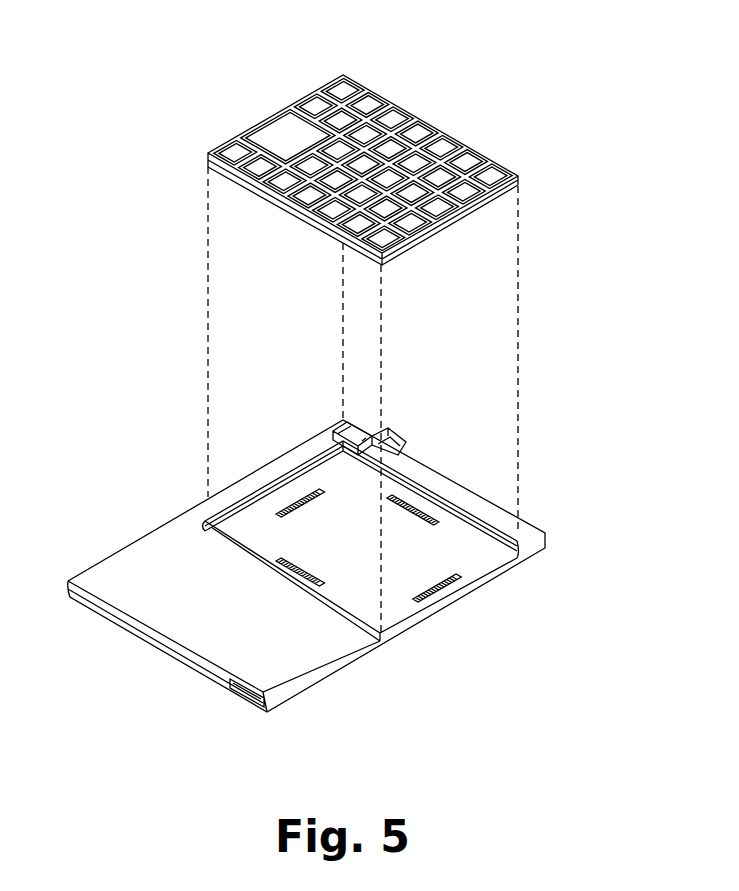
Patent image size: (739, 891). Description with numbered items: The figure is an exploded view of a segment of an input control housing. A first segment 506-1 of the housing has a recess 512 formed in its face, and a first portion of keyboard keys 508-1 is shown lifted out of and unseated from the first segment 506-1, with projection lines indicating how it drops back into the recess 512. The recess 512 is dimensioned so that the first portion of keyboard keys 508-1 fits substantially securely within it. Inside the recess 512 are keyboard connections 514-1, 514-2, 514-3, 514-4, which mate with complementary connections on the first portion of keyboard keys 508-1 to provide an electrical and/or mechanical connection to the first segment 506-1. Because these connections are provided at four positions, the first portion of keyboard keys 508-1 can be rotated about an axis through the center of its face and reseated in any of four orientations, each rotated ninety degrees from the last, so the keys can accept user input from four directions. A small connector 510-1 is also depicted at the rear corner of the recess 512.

The first segment of the input control housing 506-1 is at (132, 557).
The first portion of keyboard keys 508-1 is at (308, 113).
The connector 510-1 is at (342, 422).
The recess 512 is at (387, 609).
The keyboard connection 514-1 is at (280, 565).
The keyboard connection 514-2 is at (455, 585).
The keyboard connection 514-3 is at (420, 510).
The keyboard connection 514-4 is at (305, 497).